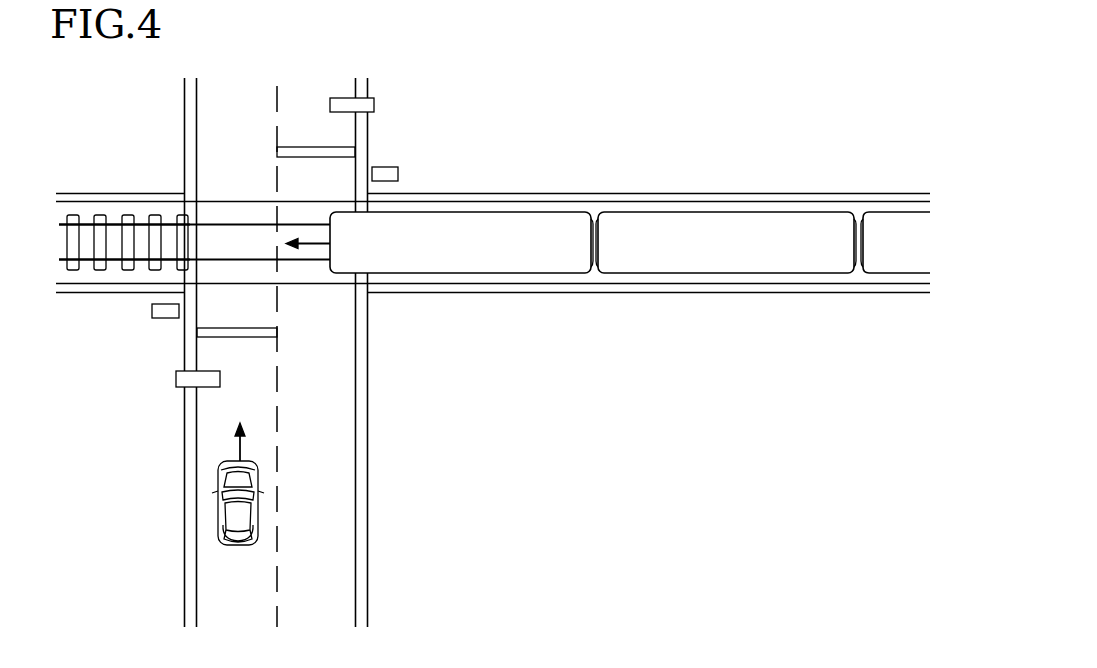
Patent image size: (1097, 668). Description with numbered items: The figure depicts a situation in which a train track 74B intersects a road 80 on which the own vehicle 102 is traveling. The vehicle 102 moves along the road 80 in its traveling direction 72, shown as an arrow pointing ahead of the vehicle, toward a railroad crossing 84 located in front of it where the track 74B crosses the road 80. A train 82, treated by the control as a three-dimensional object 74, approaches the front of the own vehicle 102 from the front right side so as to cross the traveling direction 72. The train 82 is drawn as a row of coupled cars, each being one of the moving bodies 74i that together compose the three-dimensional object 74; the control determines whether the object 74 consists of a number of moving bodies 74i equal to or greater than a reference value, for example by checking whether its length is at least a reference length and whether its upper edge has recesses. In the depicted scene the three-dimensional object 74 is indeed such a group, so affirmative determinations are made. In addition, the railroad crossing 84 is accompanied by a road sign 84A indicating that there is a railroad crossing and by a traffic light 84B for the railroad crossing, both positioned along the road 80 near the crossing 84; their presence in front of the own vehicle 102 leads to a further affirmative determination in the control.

The traveling direction 72 is at (243, 445).
The three-dimensional object 74 is at (493, 246).
The train track 74B is at (88, 218).
The moving bodies 74i is at (462, 275).
The road 80 is at (210, 588).
The train 82 is at (493, 246).
The railroad crossing 84 is at (206, 185).
The road sign 84A is at (374, 105).
The traffic light 84B is at (398, 173).
The vehicle 102 is at (218, 512).